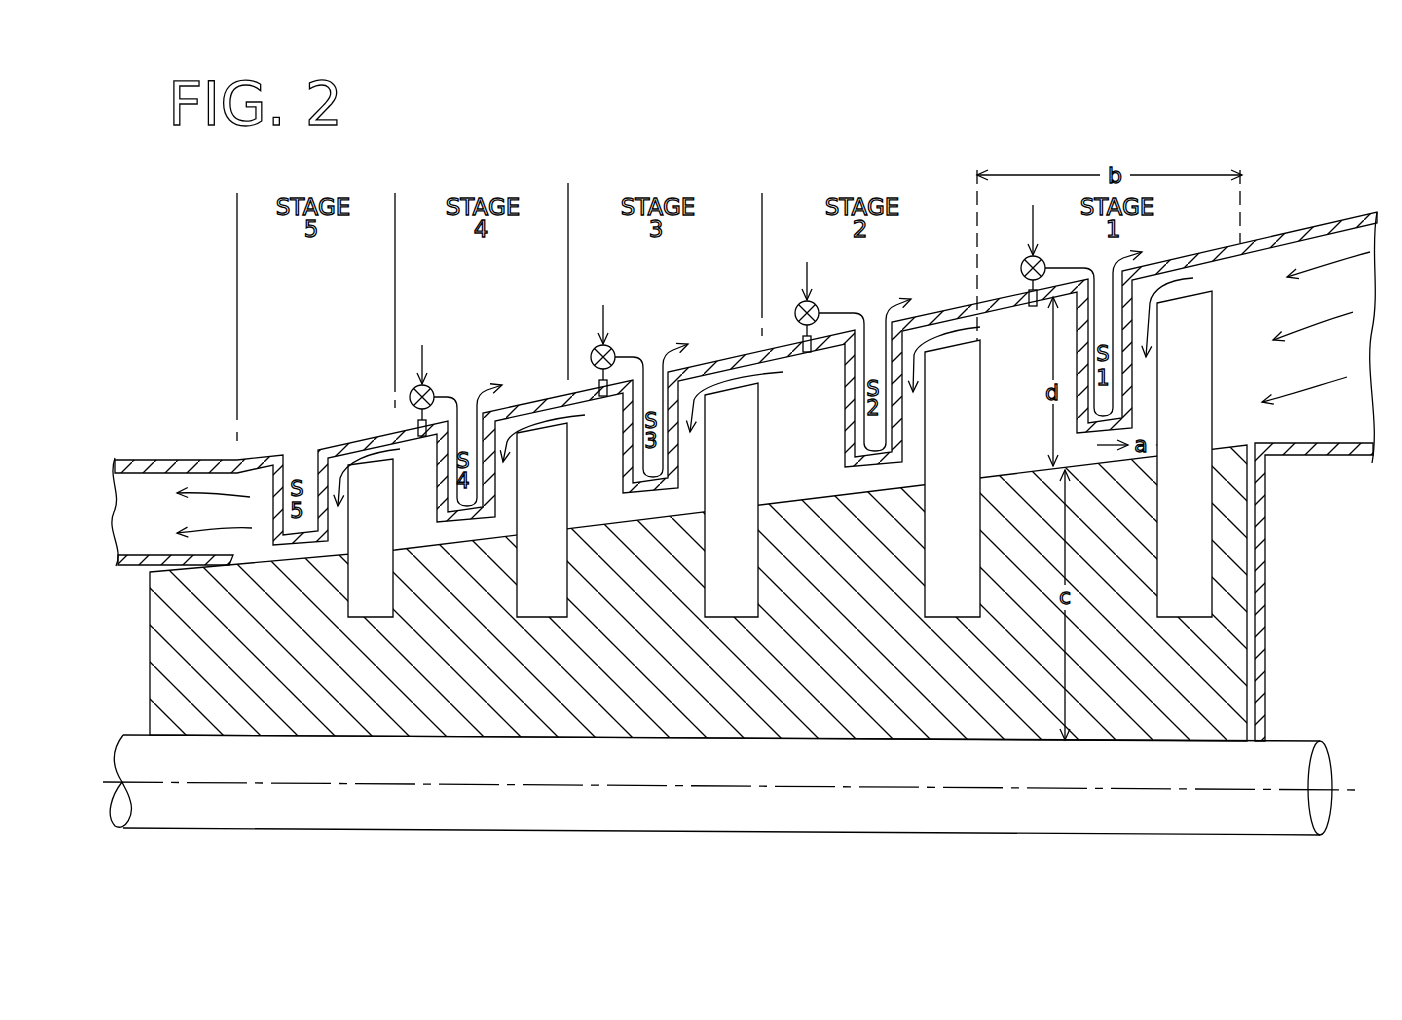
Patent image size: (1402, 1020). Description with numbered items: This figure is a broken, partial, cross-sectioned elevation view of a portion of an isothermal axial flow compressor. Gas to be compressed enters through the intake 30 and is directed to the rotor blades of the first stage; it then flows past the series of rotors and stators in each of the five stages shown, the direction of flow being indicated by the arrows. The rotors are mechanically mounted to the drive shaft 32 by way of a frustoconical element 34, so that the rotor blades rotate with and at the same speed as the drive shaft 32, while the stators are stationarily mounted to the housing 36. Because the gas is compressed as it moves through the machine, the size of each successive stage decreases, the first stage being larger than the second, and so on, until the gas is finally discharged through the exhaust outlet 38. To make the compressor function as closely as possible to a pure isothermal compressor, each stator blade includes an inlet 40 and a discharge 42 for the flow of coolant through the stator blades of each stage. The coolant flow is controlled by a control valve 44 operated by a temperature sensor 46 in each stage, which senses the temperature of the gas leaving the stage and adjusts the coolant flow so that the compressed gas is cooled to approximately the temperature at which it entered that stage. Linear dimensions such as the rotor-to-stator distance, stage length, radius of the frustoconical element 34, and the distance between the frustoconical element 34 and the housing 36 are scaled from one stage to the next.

The intake 30 is at (1283, 314).
The drive shaft 32 is at (857, 776).
The frustoconical element 34 is at (858, 652).
The housing 36 is at (712, 359).
The exhaust outlet 38 is at (137, 526).
The inlet 40 is at (447, 396).
The discharge 42 is at (480, 397).
The control valve 44 is at (411, 387).
The temperature sensor 46 is at (424, 445).